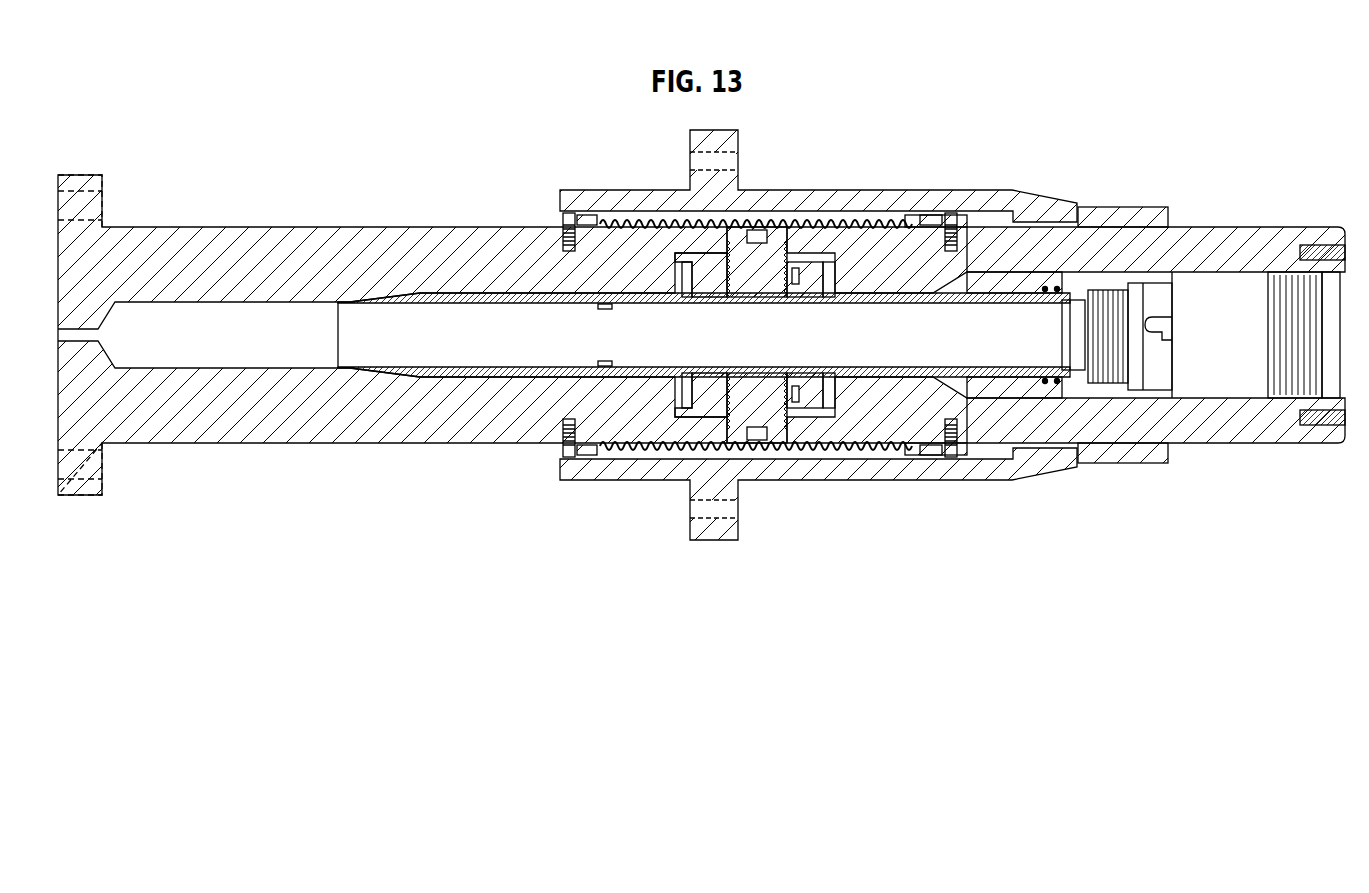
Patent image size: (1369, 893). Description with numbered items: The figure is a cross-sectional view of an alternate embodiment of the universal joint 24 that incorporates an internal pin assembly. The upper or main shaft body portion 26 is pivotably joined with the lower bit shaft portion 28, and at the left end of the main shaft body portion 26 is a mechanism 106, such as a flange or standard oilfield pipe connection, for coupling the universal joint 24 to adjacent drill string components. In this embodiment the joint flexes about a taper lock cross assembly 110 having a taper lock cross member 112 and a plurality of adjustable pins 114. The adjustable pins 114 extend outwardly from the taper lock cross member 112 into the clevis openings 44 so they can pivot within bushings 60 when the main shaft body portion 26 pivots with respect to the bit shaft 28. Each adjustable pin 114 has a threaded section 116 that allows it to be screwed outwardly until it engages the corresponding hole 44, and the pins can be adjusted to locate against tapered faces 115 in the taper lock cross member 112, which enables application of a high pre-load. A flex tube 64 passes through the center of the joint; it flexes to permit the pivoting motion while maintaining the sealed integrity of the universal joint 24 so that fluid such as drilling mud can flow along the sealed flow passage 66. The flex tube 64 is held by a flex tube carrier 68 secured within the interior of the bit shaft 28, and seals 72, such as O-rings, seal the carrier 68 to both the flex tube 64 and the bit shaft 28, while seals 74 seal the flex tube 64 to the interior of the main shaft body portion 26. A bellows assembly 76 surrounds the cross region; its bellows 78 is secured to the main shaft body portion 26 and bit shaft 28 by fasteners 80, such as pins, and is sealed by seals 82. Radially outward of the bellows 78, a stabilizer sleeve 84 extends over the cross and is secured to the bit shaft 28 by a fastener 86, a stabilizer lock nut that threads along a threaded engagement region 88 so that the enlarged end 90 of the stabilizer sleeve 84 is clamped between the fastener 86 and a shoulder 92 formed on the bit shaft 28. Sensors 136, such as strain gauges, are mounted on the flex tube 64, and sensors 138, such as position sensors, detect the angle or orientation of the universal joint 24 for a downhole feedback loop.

The universal joint 24 is at (848, 173).
The main shaft body portion 26 is at (420, 227).
The bit shaft portion 28 is at (1245, 227).
The clevis openings 44 is at (735, 427).
The bushings 60 is at (787, 243).
The flex tube 64 is at (520, 293).
The sealed flow passage 66 is at (232, 346).
The flex tube carrier 68 is at (1125, 398).
The seals 72 is at (1048, 298).
The seals 74 is at (370, 372).
The bellows assembly 76 is at (853, 459).
The bellows 78 is at (868, 459).
The fasteners 80 is at (950, 220).
The seals 82 is at (932, 218).
The stabilizer sleeve 84 is at (915, 481).
The fastener 86 is at (1150, 207).
The threaded engagement region 88 is at (1098, 222).
The enlarged end 90 is at (1040, 469).
The shoulder 92 is at (1027, 211).
The coupling mechanism 106 is at (98, 176).
The taper lock cross assembly 110 is at (698, 252).
The taper lock cross member 112 is at (698, 402).
The adjustable pins 114 is at (757, 232).
The tapered faces 115 is at (733, 287).
The threaded section 116 is at (769, 286).
The sensors 136 is at (605, 360).
The sensors 138 is at (797, 385).